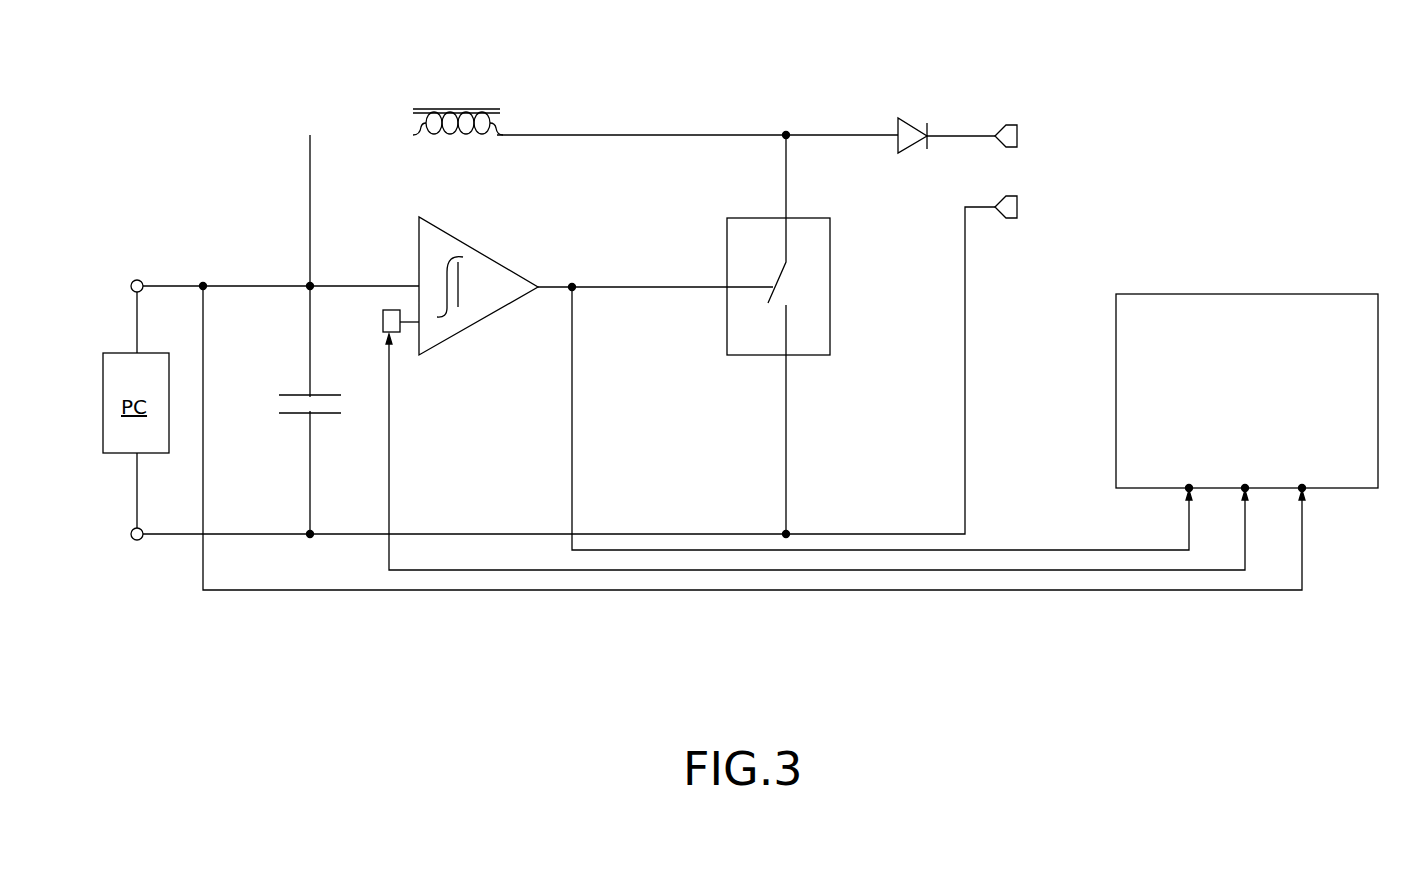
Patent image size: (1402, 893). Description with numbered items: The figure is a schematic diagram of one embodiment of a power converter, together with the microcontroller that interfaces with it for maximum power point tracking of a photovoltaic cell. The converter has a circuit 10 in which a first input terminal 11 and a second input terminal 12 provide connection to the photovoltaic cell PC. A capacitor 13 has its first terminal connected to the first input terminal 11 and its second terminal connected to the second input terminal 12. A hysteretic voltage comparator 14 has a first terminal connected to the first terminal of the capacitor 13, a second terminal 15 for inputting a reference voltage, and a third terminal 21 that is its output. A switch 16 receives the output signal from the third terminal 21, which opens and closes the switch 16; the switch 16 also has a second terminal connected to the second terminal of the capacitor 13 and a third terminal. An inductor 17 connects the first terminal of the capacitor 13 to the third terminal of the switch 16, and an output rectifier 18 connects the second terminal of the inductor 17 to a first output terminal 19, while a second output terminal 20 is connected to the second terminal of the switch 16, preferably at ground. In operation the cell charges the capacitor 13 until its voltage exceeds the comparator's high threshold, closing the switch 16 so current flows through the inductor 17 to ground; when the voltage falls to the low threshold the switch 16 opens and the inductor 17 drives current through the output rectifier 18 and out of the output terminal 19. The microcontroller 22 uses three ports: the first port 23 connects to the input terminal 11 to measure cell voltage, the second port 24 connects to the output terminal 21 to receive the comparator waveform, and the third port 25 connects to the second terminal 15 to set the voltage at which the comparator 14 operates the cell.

The circuit 10 is at (262, 198).
The first input terminal 11 is at (137, 280).
The second input terminal 12 is at (138, 541).
The capacitor 13 is at (345, 405).
The hysteretic voltage comparator 14 is at (477, 265).
The second terminal 15 is at (398, 325).
The switch 16 is at (812, 283).
The inductor 17 is at (503, 122).
The output rectifier 18 is at (912, 130).
The first output terminal 19 is at (1017, 136).
The second output terminal 20 is at (1017, 207).
The third terminal 21 is at (572, 282).
The microcontroller 22 is at (1207, 312).
The first port 23 is at (1305, 490).
The second port 24 is at (1183, 490).
The third port 25 is at (1250, 493).